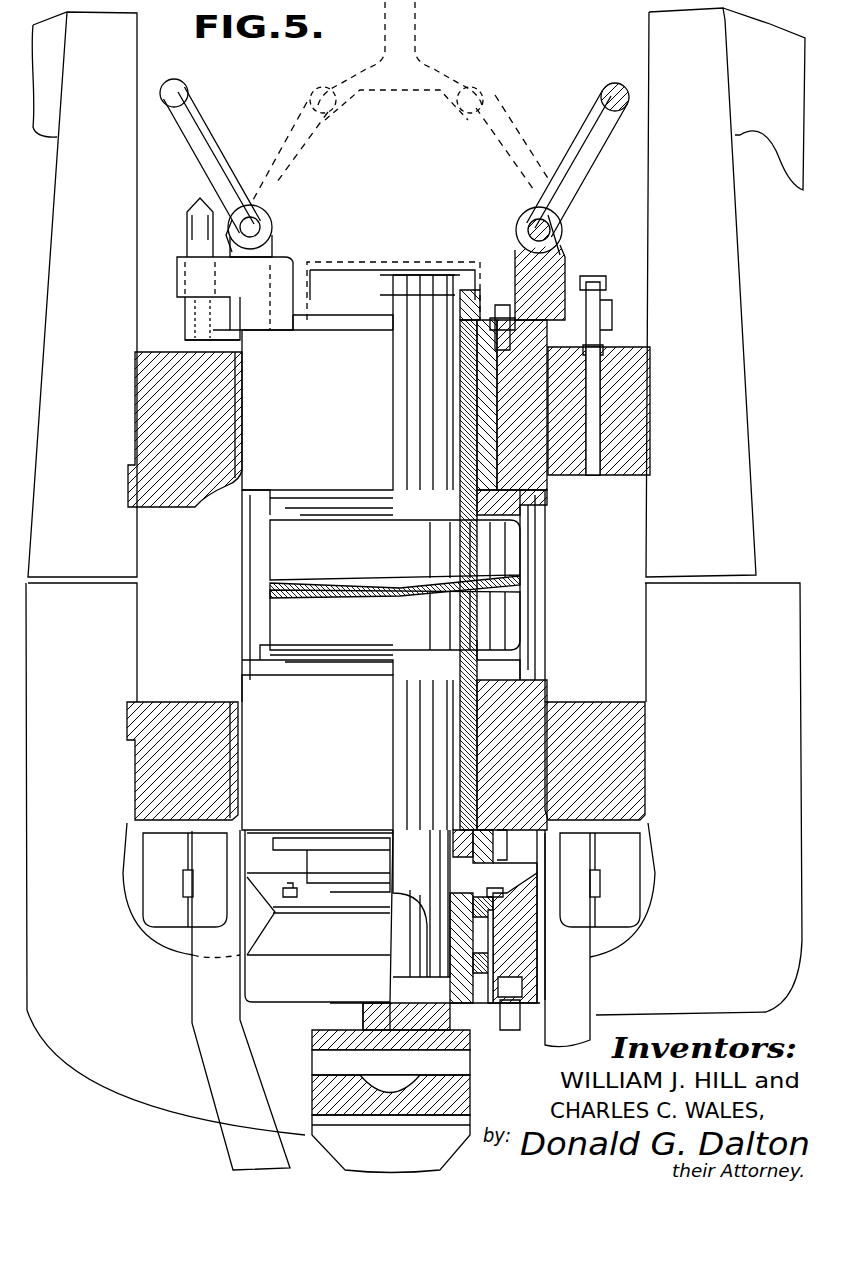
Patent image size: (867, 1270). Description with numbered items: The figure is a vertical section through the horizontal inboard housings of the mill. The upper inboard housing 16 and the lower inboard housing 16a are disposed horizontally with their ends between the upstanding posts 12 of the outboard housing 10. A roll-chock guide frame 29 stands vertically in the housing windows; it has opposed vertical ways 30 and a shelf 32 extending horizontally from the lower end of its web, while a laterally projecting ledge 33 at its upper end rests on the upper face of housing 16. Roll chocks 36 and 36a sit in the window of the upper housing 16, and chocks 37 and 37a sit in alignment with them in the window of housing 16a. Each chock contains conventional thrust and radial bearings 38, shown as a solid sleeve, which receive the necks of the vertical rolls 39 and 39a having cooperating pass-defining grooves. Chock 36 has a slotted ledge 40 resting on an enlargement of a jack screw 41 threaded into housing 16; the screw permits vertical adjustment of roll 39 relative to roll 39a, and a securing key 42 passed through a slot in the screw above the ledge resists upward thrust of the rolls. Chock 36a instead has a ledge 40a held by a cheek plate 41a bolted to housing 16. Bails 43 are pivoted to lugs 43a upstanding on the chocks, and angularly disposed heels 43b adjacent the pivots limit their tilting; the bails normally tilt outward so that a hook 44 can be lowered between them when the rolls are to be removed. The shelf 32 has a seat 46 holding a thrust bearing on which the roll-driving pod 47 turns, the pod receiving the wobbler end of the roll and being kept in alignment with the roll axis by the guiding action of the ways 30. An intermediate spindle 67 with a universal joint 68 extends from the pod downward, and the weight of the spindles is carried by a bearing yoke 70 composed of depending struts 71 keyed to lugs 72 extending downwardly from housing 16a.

The outboard housing 10 is at (742, 259).
The upstanding post 12 is at (102, 196).
The upper inboard housing 16 is at (155, 398).
The lower inboard housing 16a is at (686, 750).
The roll-chock guide frame 29 is at (540, 580).
The vertical way 30 is at (522, 541).
The shelf 32 is at (553, 957).
The ledge 33 is at (222, 338).
The roll chock 36 is at (338, 450).
The roll chock 36a is at (525, 480).
The roll chock 37 is at (338, 765).
The roll chock 37a is at (530, 692).
The thrust and radial bearing 38 is at (470, 402).
The vertical roll 39 is at (282, 542).
The vertical roll 39a is at (285, 635).
The ledge 40 is at (180, 285).
The ledge 40a is at (548, 285).
The jack screw 41 is at (190, 326).
The cheek plate 41a is at (612, 348).
The securing key 42 is at (185, 254).
The bail 43 is at (207, 134).
The lug 43a is at (275, 248).
The heel 43b is at (506, 230).
The hook 44 is at (420, 100).
The seat 46 is at (505, 1032).
The roll-driving pod 47 is at (455, 1005).
The intermediate spindle 67 is at (345, 1165).
The universal joint 68 is at (322, 1044).
The bearing yoke 70 is at (184, 980).
The strut 71 is at (212, 1042).
The lug 72 is at (155, 876).